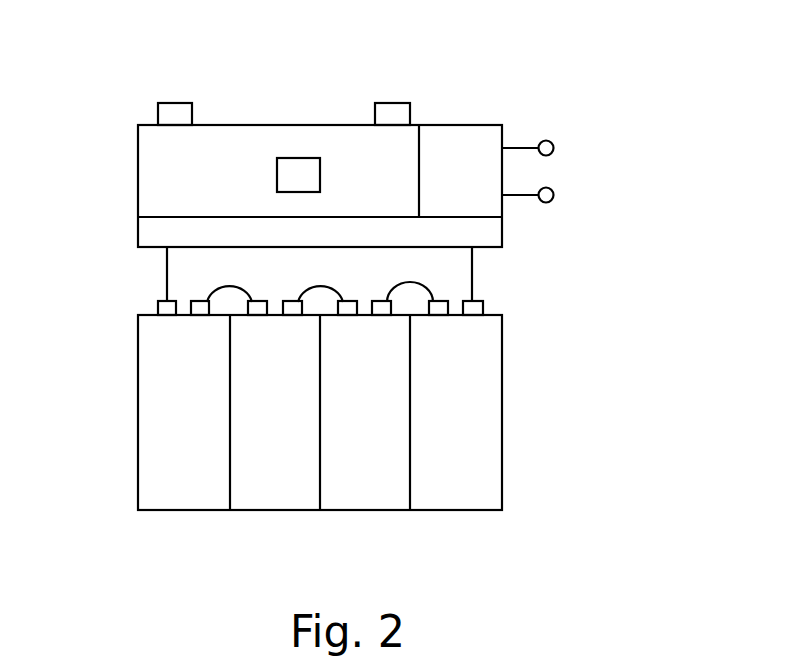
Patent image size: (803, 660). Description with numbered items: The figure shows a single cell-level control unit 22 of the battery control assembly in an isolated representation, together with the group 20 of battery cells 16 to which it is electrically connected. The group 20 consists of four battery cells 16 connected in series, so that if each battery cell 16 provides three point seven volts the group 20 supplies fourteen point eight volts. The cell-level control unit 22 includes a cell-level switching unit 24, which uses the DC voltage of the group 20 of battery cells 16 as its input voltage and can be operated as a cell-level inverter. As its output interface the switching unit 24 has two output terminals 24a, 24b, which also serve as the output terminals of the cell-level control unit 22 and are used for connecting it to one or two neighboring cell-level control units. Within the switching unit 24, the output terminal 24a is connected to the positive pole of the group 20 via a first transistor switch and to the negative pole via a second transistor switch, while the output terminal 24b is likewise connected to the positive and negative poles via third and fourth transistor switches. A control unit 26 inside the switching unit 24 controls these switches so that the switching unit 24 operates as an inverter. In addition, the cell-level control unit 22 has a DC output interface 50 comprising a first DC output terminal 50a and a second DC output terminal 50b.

The battery cell 16 is at (180, 482).
The group of battery cells 20 is at (371, 415).
The cell-level control unit 22 is at (609, 182).
The cell-level switching unit 24 is at (153, 175).
The output terminal 24a is at (173, 110).
The output terminal 24b is at (390, 110).
The control unit 26 is at (298, 172).
The DC output interface 50 is at (602, 146).
The first DC output terminal 50a is at (547, 140).
The second DC output terminal 50b is at (554, 197).